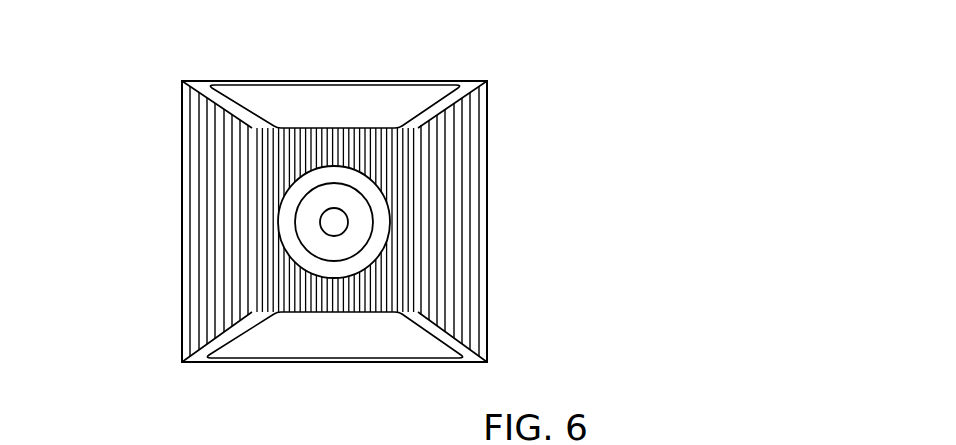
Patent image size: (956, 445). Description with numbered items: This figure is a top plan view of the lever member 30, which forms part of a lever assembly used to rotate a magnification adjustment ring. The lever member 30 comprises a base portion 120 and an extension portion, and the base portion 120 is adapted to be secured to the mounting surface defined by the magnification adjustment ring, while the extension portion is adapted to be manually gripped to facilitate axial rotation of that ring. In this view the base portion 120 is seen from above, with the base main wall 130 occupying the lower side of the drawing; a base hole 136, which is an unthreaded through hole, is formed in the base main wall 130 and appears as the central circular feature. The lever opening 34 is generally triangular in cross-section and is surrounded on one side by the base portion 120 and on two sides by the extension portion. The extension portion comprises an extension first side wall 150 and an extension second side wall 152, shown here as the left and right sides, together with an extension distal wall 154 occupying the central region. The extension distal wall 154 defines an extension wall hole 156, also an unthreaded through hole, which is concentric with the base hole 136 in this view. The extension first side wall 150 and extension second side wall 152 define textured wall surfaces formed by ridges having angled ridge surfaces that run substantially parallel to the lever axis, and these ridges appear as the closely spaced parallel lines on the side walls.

The lever member 30 is at (523, 100).
The lever opening 34 is at (300, 97).
The base portion 120 is at (342, 76).
The base main wall 130 is at (318, 338).
The base hole 136 is at (336, 222).
The extension first side wall 150 is at (205, 213).
The extension second side wall 152 is at (460, 275).
The extension distal wall 154 is at (376, 148).
The extension wall hole 156 is at (375, 245).